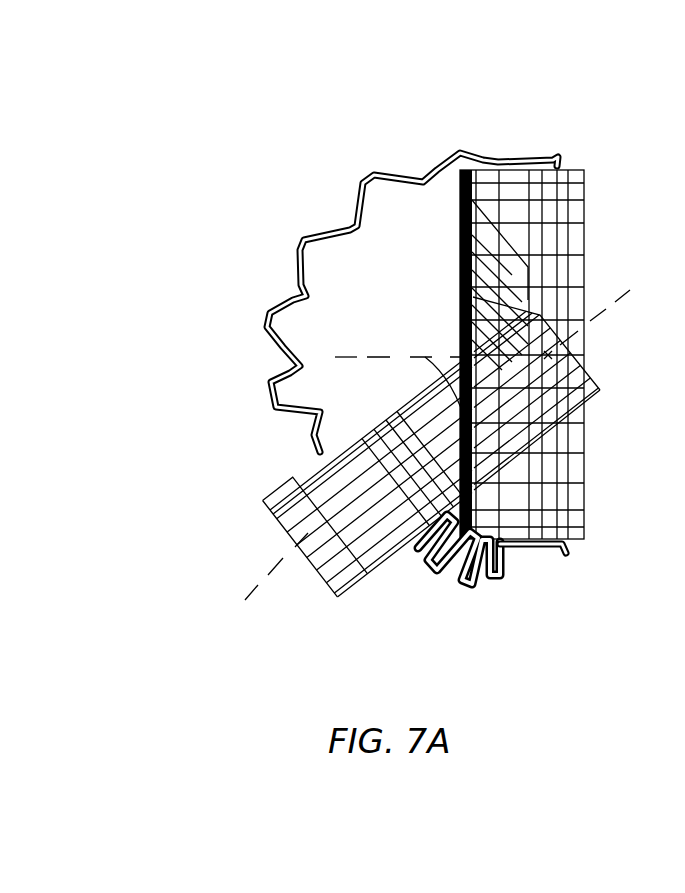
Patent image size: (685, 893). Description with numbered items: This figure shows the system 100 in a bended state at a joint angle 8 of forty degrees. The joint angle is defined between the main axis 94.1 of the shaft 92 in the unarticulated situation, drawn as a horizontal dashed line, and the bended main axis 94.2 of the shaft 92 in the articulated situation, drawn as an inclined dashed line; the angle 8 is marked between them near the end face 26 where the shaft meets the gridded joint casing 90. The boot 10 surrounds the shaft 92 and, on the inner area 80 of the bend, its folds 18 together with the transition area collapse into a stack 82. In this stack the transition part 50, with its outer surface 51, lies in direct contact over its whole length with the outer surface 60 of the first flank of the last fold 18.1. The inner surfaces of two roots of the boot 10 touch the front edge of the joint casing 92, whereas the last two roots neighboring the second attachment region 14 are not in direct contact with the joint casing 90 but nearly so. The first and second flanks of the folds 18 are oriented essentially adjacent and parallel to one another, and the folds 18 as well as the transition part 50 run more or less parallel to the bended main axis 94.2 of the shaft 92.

The exhaust arrangement 100 is at (396, 116).
The boot 10 is at (318, 218).
The joint casing 90 is at (590, 214).
The shaft 92 is at (600, 368).
The pipe end face 26 is at (357, 328).
The main axis 94.1 is at (350, 353).
The main axis 94.2 is at (249, 566).
The angle 8 is at (427, 380).
The outer surface 60 is at (431, 524).
The folds 18 is at (488, 590).
The last fold 18.1 is at (425, 553).
The second attachment region 14 is at (537, 556).
The transition part 50 is at (420, 548).
The outer surface 51 is at (442, 553).
The inner area 80 is at (406, 592).
The stack 82 is at (490, 612).